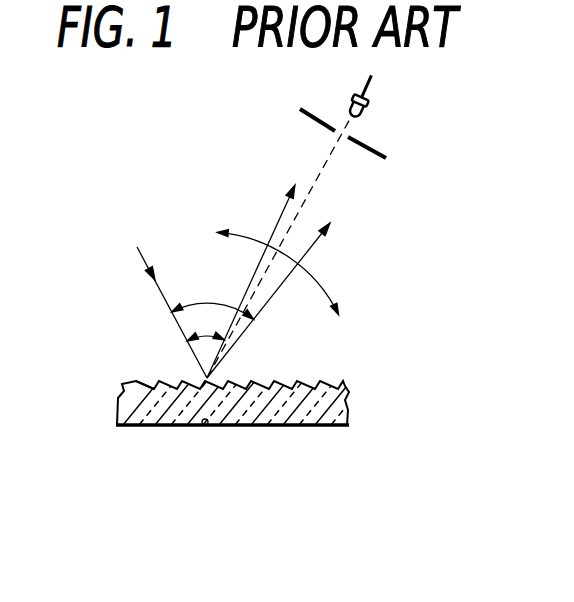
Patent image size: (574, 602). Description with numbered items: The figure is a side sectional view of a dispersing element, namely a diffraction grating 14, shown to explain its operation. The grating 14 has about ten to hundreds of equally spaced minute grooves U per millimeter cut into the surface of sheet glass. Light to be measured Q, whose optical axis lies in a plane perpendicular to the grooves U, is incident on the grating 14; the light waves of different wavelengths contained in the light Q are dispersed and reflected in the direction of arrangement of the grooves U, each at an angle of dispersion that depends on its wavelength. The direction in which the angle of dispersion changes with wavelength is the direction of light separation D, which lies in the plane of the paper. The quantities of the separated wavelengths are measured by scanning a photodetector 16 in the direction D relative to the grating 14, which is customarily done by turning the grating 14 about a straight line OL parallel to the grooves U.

The diffraction grating 14 is at (323, 418).
The photodetector 16 is at (366, 112).
The light to be measured Q is at (162, 297).
The direction of light separation D is at (328, 291).
The grooves U is at (268, 382).
The straight line OL is at (204, 424).